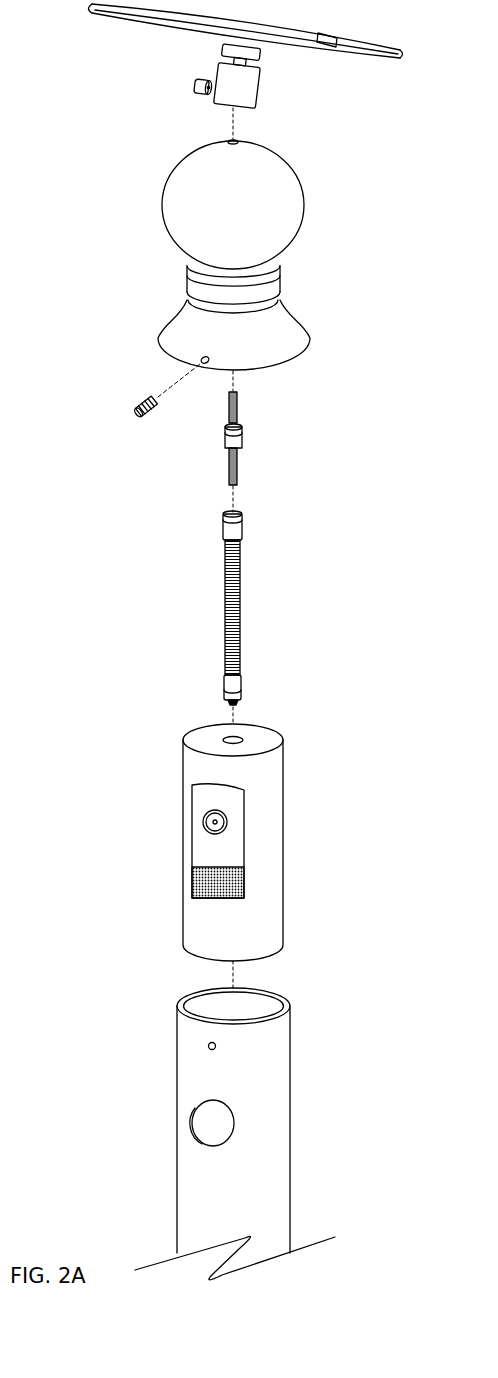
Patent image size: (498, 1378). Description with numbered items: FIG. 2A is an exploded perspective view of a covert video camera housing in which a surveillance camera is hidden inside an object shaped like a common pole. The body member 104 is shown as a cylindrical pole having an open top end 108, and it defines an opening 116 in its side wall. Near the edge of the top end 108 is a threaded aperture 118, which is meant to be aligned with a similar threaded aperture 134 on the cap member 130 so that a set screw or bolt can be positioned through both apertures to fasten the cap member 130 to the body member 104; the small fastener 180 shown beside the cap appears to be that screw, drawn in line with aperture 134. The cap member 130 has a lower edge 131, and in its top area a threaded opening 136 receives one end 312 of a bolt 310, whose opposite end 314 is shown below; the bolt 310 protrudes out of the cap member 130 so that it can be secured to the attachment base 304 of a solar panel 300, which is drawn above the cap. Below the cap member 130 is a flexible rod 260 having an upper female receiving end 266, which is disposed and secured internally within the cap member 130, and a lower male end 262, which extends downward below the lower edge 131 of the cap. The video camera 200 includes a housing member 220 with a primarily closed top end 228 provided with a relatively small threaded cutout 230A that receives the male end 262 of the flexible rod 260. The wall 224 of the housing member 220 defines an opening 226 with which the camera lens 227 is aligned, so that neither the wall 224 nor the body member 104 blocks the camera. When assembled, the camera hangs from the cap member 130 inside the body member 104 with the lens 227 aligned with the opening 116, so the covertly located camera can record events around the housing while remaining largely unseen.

The solar panel 300 is at (358, 78).
The attachment base 304 is at (250, 90).
The opening 136 is at (240, 142).
The cap member 130 is at (285, 225).
The lower edge 131 is at (273, 377).
The aperture 134 is at (202, 366).
The set screw 180 is at (130, 392).
The bolt 310 is at (302, 446).
The one end of bolt 312 is at (240, 393).
The opposite end of bolt 314 is at (240, 482).
The flexible rod 260 is at (303, 608).
The female receiving end 266 is at (243, 527).
The male end 262 is at (243, 685).
The video camera 200 is at (247, 826).
The housing member 220 is at (257, 930).
The wall 224 is at (262, 777).
The top end 228 is at (268, 738).
The cutout 230A is at (223, 738).
The camera lens 227 is at (205, 815).
The opening 226 is at (192, 877).
The body member 104 is at (247, 1134).
The top end 108 is at (275, 1040).
The opening 116 is at (218, 1123).
The aperture 118 is at (208, 1048).